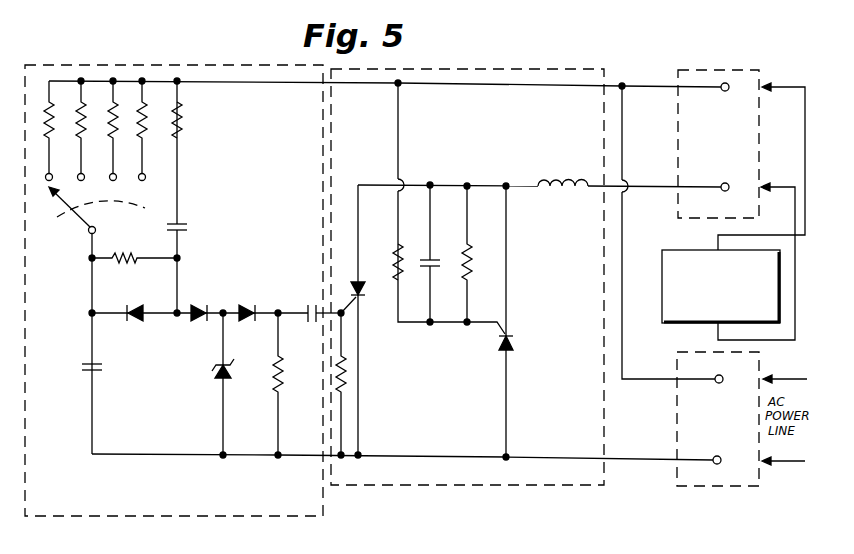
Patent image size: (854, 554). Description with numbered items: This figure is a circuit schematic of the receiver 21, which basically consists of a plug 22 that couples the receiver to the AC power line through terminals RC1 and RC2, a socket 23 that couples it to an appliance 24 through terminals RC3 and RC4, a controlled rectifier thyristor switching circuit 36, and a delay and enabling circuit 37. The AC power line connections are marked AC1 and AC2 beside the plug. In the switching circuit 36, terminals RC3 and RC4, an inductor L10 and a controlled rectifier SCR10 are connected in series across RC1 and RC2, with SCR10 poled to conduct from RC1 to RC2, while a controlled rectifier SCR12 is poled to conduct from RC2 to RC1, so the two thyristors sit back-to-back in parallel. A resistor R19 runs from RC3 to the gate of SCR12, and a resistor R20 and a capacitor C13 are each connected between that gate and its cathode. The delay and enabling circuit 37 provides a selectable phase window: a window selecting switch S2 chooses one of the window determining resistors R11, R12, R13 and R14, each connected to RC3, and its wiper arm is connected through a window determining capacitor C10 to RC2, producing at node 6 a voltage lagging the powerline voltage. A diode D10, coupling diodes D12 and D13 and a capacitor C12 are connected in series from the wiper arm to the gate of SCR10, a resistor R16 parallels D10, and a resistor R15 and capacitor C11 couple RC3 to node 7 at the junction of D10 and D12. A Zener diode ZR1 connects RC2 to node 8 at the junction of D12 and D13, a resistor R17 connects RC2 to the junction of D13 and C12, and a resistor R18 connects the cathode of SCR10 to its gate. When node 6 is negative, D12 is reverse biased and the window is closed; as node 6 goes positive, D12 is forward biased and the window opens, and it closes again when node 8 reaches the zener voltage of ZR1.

The window determining resistor R11 is at (55, 105).
The window determining resistor R12 is at (88, 108).
The window determining resistor R13 is at (117, 118).
The window determining resistor R14 is at (147, 115).
The resistor R15 is at (182, 120).
The resistor R16 is at (122, 259).
The resistor R17 is at (282, 372).
The resistor R18 is at (345, 375).
The resistor R19 is at (402, 260).
The resistor R20 is at (470, 278).
The window determining capacitor C10 is at (92, 412).
The capacitor C11 is at (190, 226).
The capacitor C12 is at (305, 320).
The capacitor C13 is at (434, 258).
The diode D10 is at (140, 323).
The coupling diode D12 is at (205, 306).
The coupling diode D13 is at (247, 305).
The Zener diode ZR1 is at (220, 373).
The controlled rectifier SCR10 is at (364, 290).
The controlled rectifier SCR12 is at (497, 345).
The inductor L10 is at (570, 189).
The window selecting switch S2 is at (78, 215).
The node 6 is at (88, 318).
The node 7 is at (180, 318).
The node 8 is at (228, 318).
The receiver 21 is at (592, 60).
The plug 22 is at (727, 487).
The socket 23 is at (742, 65).
The appliance 24 is at (662, 290).
The controlled rectifier thyristor switching circuit 36 is at (510, 489).
The delay and enabling circuit 37 is at (212, 517).
The terminal RC1 is at (715, 370).
The terminal RC2 is at (715, 470).
The terminal RC3 is at (715, 98).
The terminal RC4 is at (715, 199).
The AC line terminal AC1 is at (787, 371).
The AC line terminal AC2 is at (783, 470).